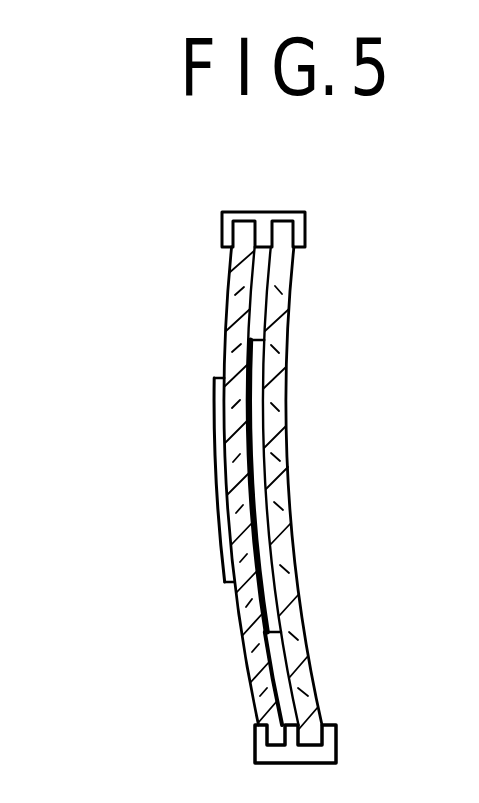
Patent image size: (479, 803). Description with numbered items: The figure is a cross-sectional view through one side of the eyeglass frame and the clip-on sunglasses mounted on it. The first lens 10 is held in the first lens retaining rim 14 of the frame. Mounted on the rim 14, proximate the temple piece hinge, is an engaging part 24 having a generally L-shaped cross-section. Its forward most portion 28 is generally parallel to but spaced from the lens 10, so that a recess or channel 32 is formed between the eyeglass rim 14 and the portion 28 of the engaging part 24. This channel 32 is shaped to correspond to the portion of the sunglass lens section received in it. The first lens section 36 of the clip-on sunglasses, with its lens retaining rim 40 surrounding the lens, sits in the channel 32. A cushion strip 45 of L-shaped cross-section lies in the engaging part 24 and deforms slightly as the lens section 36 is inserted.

The first lens 10 is at (283, 362).
The first lens retaining rim 14 is at (288, 212).
The engaging part 24 is at (220, 543).
The forward most portion 28 is at (217, 415).
The channel 32 is at (266, 468).
The first lens section 36 is at (248, 650).
The lens retaining rim 40 is at (232, 212).
The cushion strip 45 is at (257, 529).